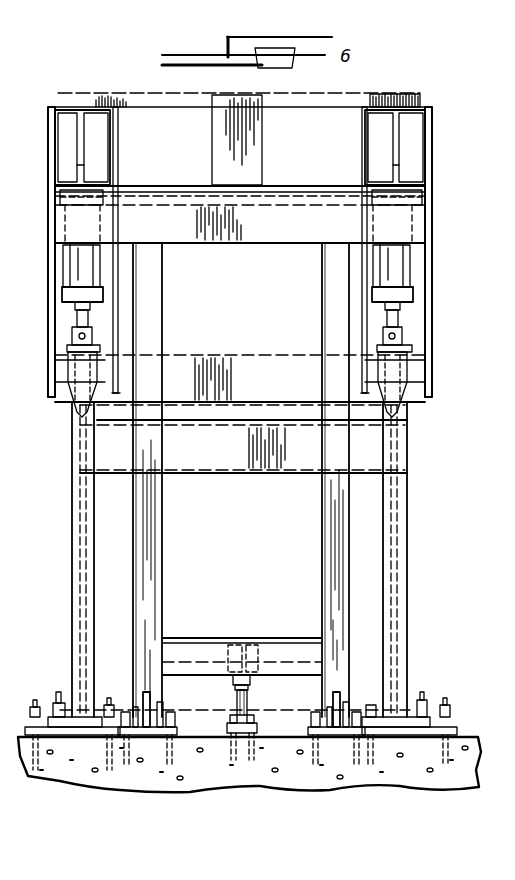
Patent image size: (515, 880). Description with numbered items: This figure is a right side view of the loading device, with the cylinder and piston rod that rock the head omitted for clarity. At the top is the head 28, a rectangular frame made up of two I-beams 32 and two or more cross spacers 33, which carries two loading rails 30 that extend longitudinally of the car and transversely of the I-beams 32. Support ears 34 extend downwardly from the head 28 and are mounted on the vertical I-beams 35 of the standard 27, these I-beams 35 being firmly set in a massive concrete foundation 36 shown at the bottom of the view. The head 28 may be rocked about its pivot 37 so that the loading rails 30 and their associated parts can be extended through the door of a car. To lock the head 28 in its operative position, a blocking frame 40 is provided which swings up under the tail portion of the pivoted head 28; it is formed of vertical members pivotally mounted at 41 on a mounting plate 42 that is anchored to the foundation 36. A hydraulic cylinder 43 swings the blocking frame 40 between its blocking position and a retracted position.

The standard 27 is at (420, 500).
The head 28 is at (447, 109).
The loading rails 30 is at (262, 362).
The I-beams 32 is at (93, 151).
The cross spacers 33 is at (365, 97).
The support ears 34 is at (50, 232).
The vertical I-beams 35 is at (72, 548).
The concrete foundation 36 is at (462, 762).
The pivot 37 is at (418, 374).
The blocking frame 40 is at (170, 290).
The pivotal mounting 41 is at (162, 712).
The mounting plate 42 is at (428, 714).
The hydraulic cylinder 43 is at (247, 701).